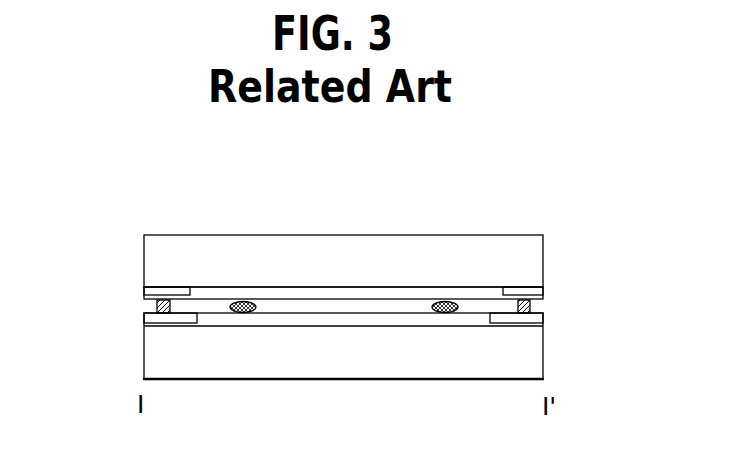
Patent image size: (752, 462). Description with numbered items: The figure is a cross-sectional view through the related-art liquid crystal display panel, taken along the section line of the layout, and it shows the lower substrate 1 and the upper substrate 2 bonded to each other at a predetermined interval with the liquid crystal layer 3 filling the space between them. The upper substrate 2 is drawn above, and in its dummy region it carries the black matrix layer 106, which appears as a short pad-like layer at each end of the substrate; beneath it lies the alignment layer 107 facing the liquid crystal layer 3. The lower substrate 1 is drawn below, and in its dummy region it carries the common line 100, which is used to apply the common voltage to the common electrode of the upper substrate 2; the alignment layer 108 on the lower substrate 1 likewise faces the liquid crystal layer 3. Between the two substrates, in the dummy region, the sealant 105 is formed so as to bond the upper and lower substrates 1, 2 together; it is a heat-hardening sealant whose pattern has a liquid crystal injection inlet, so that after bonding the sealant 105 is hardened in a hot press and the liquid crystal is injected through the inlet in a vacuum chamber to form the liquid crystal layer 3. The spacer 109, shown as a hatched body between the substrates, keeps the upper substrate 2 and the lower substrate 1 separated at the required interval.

The lower substrate 1 is at (544, 352).
The upper substrate 2 is at (147, 258).
The liquid crystal layer 3 is at (322, 308).
The common line 100 is at (513, 326).
The sealant 105 is at (533, 304).
The black matrix layer 106 is at (170, 288).
The alignment layer 107 is at (147, 298).
The alignment layer 108 is at (540, 318).
The spacer 109 is at (241, 314).